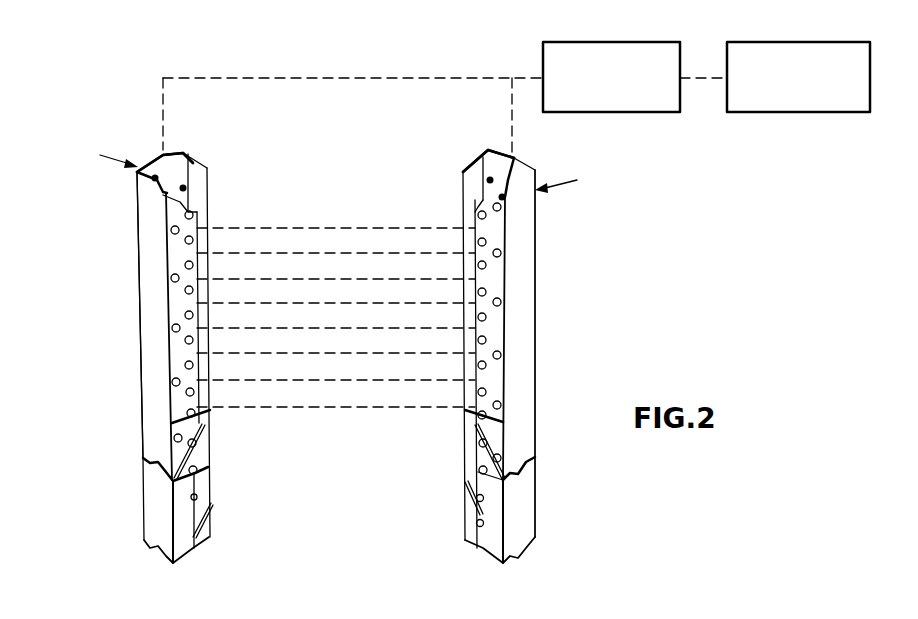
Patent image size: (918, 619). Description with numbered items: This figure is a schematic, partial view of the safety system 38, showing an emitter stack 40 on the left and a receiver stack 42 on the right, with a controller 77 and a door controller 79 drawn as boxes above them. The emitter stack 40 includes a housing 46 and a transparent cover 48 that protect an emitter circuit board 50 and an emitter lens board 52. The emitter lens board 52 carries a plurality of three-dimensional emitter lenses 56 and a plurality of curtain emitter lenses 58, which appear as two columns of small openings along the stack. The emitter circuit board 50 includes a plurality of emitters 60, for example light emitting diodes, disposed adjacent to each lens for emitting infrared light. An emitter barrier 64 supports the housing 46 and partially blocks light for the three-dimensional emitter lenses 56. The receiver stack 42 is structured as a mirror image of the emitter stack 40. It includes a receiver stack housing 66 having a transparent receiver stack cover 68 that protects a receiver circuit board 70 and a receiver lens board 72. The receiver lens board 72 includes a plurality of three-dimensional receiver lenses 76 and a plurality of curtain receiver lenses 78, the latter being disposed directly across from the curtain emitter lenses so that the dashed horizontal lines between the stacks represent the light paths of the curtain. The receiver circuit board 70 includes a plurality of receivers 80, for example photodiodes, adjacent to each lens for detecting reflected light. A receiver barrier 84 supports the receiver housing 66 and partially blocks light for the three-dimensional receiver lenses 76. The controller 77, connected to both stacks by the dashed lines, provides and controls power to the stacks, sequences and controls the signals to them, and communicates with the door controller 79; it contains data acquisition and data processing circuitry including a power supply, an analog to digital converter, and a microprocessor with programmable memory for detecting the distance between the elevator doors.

The safety system 38 is at (336, 247).
The emitter stack 40 is at (147, 146).
The receiver stack 42 is at (525, 150).
The housing 46 is at (147, 202).
The transparent cover 48 is at (203, 453).
The emitter circuit board 50 is at (178, 171).
The emitter lens board 52 is at (193, 223).
The three-dimensional emitter lenses 56 is at (173, 234).
The curtain emitter lenses 58 is at (186, 393).
The emitters 60 is at (188, 192).
The emitter barrier 64 is at (183, 550).
The receiver stack housing 66 is at (520, 227).
The transparent receiver stack cover 68 is at (488, 460).
The receiver circuit board 70 is at (482, 200).
The receiver lens board 72 is at (478, 227).
The three-dimensional receiver lenses 76 is at (501, 353).
The curtain receiver lenses 78 is at (486, 343).
The receivers 80 is at (483, 200).
The receiver barrier 84 is at (495, 547).
The controller 77 is at (623, 42).
The door controller 79 is at (800, 42).